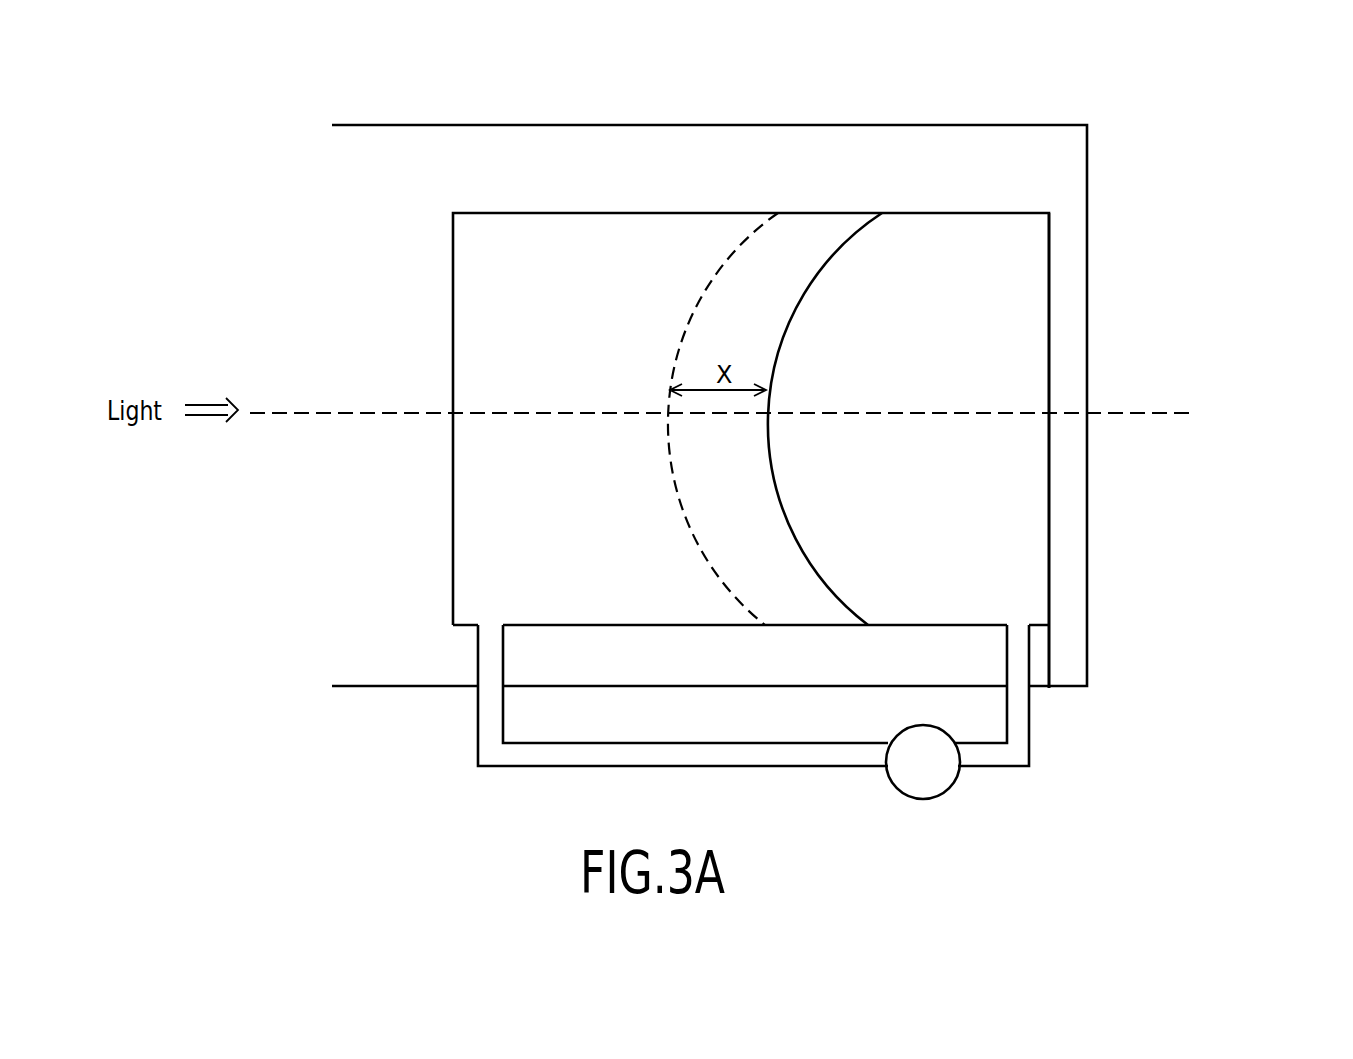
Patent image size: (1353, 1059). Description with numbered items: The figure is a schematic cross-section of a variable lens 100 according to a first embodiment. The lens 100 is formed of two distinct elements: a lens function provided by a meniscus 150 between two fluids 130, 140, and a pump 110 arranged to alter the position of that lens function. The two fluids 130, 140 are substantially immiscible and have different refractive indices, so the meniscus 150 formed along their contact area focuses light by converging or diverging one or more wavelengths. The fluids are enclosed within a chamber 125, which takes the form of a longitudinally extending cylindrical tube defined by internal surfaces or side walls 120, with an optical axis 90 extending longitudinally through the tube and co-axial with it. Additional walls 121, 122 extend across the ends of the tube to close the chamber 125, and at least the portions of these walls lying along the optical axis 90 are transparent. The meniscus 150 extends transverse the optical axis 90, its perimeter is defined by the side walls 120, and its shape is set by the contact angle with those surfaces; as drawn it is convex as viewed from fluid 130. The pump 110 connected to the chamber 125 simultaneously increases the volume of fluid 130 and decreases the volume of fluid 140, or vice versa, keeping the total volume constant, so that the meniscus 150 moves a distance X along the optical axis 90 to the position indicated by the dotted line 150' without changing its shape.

The optical axis 90 is at (1168, 420).
The lens 100 is at (1155, 695).
The pump 110 is at (935, 772).
The side walls 120 is at (644, 213).
The wall 121 is at (452, 335).
The wall 122 is at (1052, 613).
The chamber 125 is at (594, 252).
The fluid 130 is at (938, 245).
The fluid 140 is at (506, 257).
The meniscus 150 is at (825, 338).
The dotted line 150' is at (723, 341).